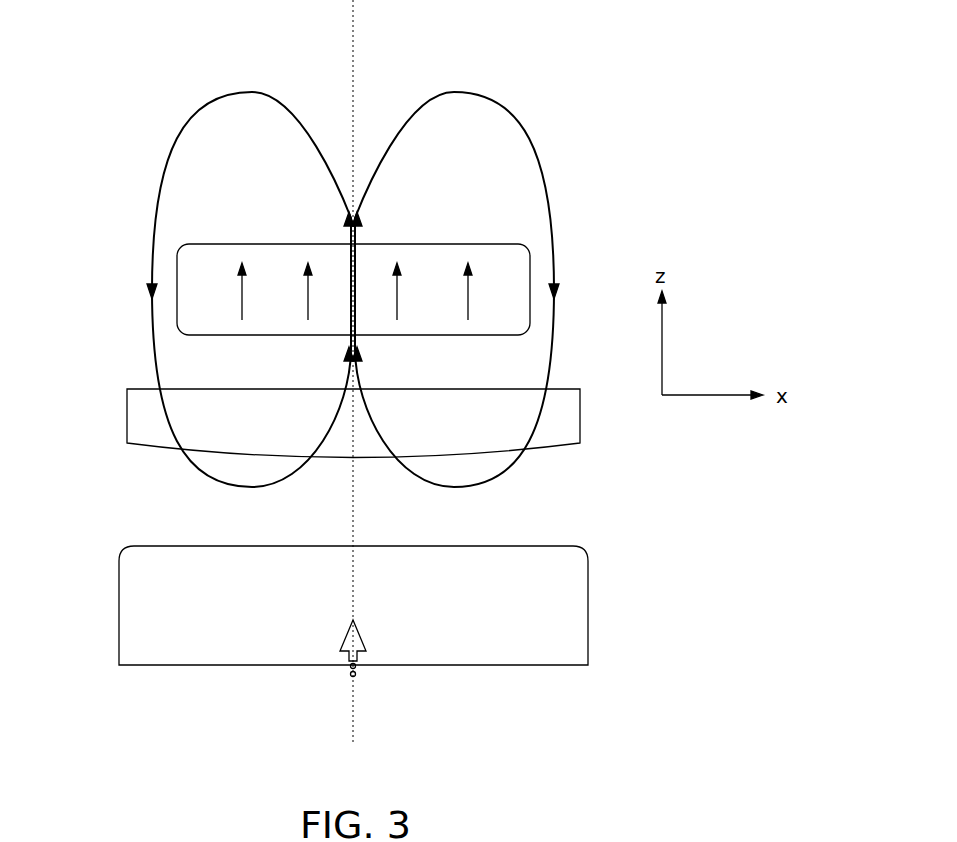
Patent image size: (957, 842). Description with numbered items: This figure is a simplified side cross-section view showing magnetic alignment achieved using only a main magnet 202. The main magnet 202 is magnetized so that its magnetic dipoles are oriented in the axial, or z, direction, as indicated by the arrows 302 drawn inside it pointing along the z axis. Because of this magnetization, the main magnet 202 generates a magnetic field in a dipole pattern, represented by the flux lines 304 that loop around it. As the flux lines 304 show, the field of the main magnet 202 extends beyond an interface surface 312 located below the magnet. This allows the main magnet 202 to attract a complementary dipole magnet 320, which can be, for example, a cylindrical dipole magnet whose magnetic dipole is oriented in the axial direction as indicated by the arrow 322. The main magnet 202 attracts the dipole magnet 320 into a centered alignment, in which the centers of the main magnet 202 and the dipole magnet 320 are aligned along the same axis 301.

The axis 301 is at (353, 40).
The flux lines 304 is at (532, 158).
The main magnet 202 is at (276, 251).
The arrows 302 is at (465, 288).
The interface surface 312 is at (127, 417).
The dipole magnet 320 is at (118, 600).
The arrow 322 is at (341, 641).